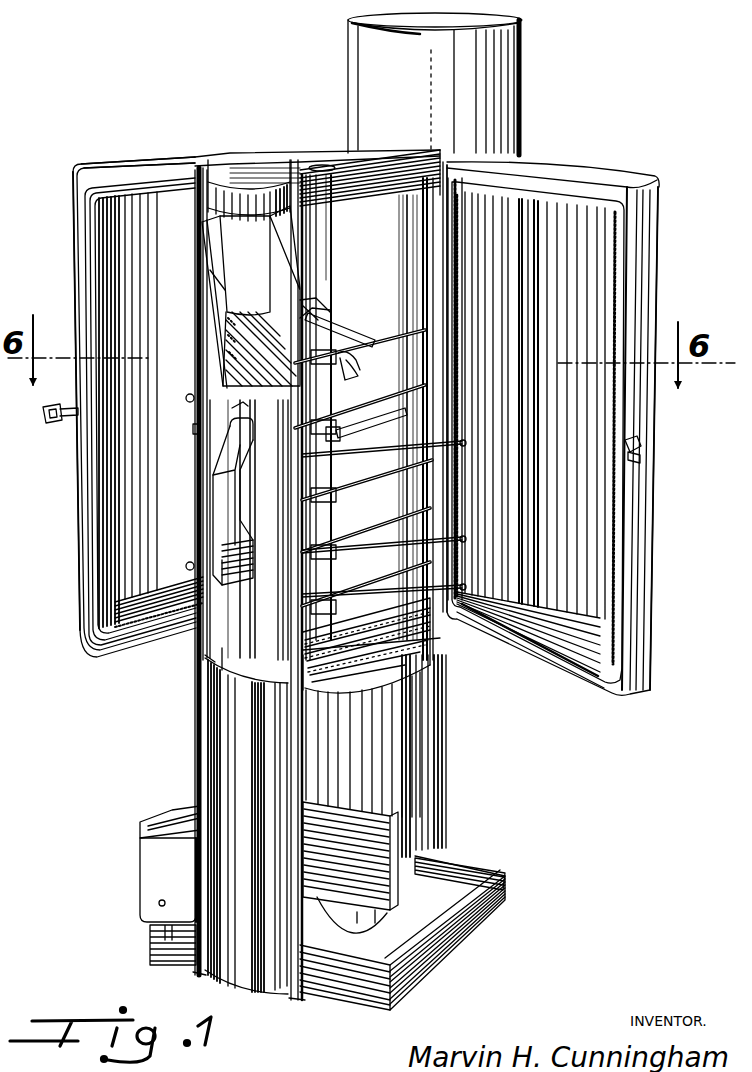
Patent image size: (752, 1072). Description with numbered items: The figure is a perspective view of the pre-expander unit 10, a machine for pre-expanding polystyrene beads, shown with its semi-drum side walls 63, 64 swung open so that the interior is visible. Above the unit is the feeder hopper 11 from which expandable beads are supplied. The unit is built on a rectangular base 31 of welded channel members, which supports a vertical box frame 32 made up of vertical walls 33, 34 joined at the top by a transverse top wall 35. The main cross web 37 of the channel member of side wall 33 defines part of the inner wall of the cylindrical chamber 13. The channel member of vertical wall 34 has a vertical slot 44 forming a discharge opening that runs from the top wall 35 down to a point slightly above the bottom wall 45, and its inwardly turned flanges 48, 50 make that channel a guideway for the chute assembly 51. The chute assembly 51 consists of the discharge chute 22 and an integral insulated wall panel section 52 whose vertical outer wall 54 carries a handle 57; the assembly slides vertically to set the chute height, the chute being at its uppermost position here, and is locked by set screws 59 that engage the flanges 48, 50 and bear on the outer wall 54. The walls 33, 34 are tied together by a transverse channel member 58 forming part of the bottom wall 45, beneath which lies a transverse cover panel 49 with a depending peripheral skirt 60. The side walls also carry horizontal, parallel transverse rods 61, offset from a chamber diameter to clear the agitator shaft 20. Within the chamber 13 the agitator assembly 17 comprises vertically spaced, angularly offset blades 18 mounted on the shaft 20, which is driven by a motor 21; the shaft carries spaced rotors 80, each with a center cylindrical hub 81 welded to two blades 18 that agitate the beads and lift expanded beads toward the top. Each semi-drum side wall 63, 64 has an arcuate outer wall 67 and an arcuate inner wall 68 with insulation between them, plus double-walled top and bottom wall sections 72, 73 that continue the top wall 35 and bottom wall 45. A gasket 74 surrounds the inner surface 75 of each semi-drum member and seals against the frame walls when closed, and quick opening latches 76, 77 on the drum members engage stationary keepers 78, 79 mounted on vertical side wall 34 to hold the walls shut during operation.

The pre-expander unit 10 is at (273, 143).
The feeder hopper 11 is at (503, 70).
The cylindrical chamber 13 is at (378, 382).
The agitator assembly 17 is at (345, 265).
The blades 18 is at (355, 370).
The agitator shaft 20 is at (323, 228).
The motor 21 is at (368, 920).
The discharge chute 22 is at (240, 407).
The rectangular base 31 is at (496, 890).
The vertical box frame 32 is at (202, 745).
The vertical side wall 33 is at (448, 746).
The vertical wall 34 is at (277, 970).
The transverse top wall 35 is at (337, 157).
The main cross web 37 is at (396, 285).
The vertical slot 44 is at (271, 240).
The bottom wall 45 is at (307, 673).
The inwardly turned flange 48 is at (210, 650).
The transverse cover panel 49 is at (377, 680).
The inwardly turned flange 50 is at (295, 837).
The chute assembly 51 is at (207, 277).
The insulated wall panel section 52 is at (210, 370).
The vertical outer wall 54 is at (197, 680).
The handle 57 is at (230, 557).
The transverse channel member 58 is at (412, 617).
The set screws 59 is at (197, 400).
The depending peripheral skirt 60 is at (441, 703).
The transverse rods 61 is at (440, 433).
The semi-drum side wall 63 is at (583, 170).
The semi-drum side wall 64 is at (150, 163).
The arcuate outer wall 67 is at (659, 307).
The arcuate inner wall 68 is at (613, 288).
The top wall section 72 is at (192, 160).
The bottom wall section 73 is at (150, 603).
The gasket 74 is at (100, 483).
The inner surface 75 is at (76, 249).
The quick opening latch 76 is at (639, 461).
The quick opening latch 77 is at (58, 438).
The stationary keeper 78 is at (290, 436).
The stationary keeper 79 is at (193, 430).
The rotors 80 is at (365, 337).
The center cylindrical hub 81 is at (342, 440).